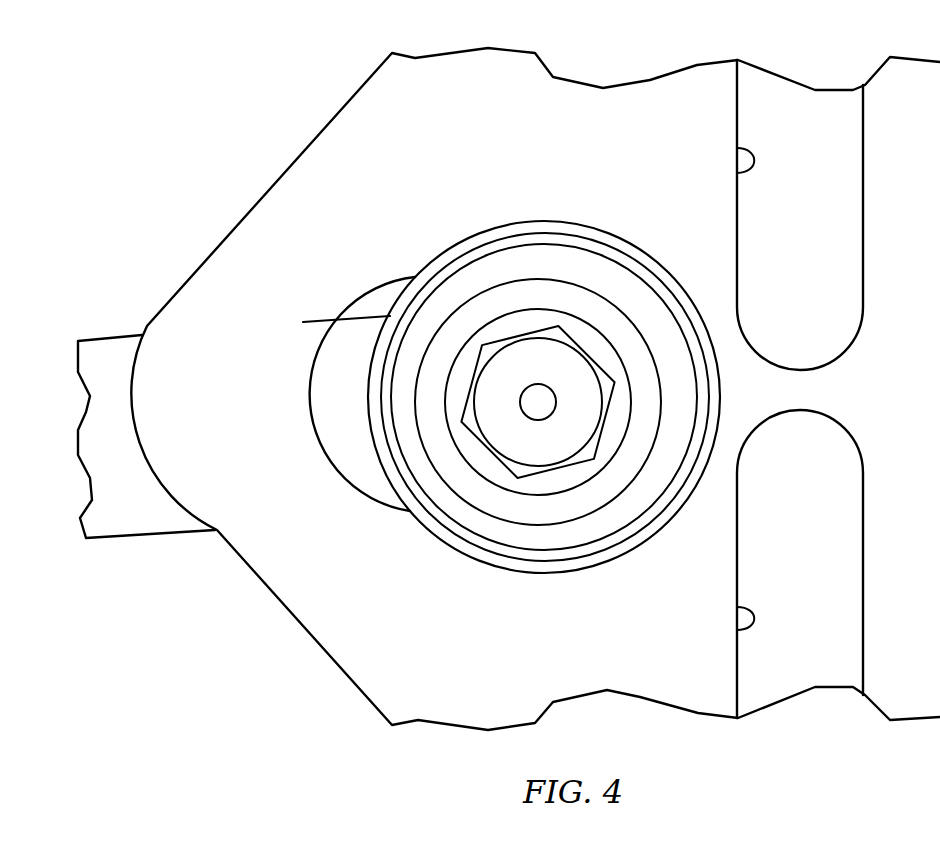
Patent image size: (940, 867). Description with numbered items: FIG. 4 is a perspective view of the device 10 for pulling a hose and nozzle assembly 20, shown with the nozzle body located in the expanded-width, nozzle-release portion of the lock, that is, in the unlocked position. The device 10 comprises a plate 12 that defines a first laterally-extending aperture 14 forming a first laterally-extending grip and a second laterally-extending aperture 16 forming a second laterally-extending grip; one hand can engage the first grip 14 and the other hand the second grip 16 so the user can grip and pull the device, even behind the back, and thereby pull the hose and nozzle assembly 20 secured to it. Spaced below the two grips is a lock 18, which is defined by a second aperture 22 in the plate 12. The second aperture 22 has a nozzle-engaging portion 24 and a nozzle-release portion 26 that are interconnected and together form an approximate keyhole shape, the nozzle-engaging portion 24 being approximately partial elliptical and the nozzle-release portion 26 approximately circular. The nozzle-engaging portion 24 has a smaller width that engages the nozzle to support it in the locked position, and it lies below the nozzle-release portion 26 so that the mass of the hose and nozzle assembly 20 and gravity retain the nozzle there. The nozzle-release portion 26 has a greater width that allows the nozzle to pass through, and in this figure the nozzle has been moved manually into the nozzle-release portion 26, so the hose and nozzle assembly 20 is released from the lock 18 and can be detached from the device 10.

The device for pulling a hose and nozzle assembly 10 is at (899, 329).
The plate 12 is at (312, 141).
The first laterally-extending aperture 14 is at (737, 151).
The second laterally-extending aperture 16 is at (737, 630).
The lock 18 is at (404, 262).
The hose and nozzle assembly 20 is at (560, 575).
The second aperture 22 is at (313, 379).
The nozzle-engaging portion 24 is at (362, 276).
The nozzle-release portion 26 is at (591, 226).